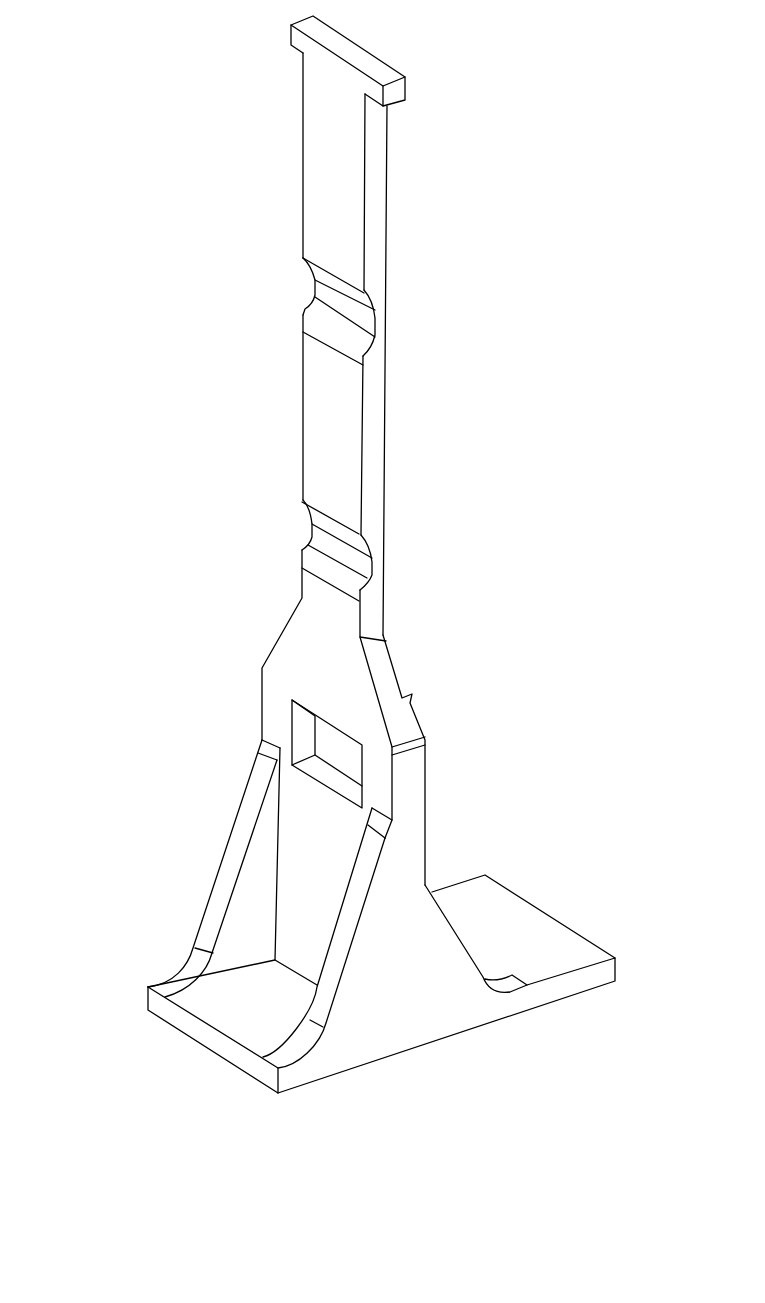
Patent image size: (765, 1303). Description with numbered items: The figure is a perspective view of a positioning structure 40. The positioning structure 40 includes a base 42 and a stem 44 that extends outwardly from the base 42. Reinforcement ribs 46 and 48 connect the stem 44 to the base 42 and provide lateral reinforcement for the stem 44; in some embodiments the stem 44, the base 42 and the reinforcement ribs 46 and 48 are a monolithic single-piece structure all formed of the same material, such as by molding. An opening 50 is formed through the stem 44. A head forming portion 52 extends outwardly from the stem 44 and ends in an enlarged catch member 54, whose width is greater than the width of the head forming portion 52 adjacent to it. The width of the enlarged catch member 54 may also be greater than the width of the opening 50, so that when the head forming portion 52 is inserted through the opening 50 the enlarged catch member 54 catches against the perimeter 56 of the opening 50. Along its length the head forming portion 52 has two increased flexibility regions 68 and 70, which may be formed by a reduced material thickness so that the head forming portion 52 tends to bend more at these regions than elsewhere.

The positioning structure 40 is at (530, 309).
The base 42 is at (546, 928).
The stem 44 is at (410, 713).
The reinforcement rib 46 is at (212, 898).
The reinforcement rib 48 is at (438, 918).
The opening 50 is at (303, 739).
The head forming portion 52 is at (166, 296).
The enlarged catch member 54 is at (354, 48).
The perimeter 56 is at (364, 781).
The increased flexibility region 68 is at (308, 543).
The increased flexibility region 70 is at (318, 298).